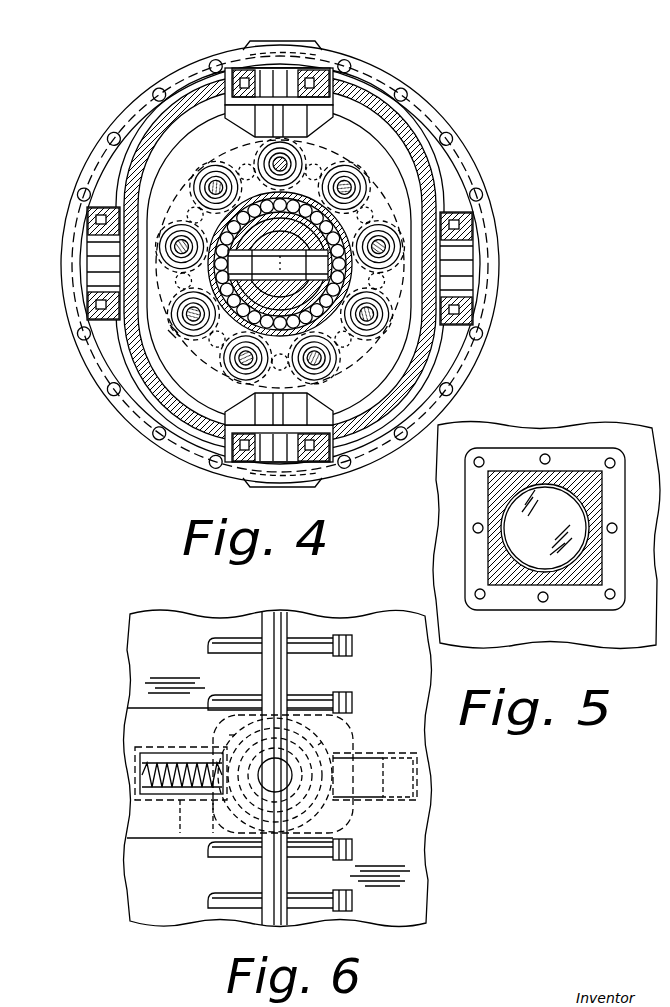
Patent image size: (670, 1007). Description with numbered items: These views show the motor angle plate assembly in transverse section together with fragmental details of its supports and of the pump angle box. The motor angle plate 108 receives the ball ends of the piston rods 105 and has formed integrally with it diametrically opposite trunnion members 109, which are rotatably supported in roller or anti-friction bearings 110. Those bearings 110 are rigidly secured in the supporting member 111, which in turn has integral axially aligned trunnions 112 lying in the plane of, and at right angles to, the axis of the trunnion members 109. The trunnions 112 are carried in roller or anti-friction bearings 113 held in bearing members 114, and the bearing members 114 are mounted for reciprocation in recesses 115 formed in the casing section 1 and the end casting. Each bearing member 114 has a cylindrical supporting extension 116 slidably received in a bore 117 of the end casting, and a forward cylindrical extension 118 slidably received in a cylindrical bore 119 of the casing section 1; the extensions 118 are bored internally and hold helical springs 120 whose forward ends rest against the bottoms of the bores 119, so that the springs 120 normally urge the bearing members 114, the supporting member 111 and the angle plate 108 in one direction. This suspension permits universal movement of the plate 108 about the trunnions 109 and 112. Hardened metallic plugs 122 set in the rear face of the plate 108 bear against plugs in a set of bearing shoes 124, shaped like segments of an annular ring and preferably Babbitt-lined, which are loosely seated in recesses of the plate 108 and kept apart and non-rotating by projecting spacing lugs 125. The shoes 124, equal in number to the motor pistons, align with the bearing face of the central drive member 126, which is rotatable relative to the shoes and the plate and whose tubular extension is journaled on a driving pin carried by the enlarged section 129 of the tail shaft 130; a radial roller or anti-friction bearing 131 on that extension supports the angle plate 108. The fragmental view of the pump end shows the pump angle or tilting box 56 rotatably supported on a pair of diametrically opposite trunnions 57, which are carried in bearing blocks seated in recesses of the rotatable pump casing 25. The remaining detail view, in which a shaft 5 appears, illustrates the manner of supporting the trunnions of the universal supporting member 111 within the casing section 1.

In FIG. 6, the casing section 1 is at (168, 900).
In FIG. 6, the shaft 5 is at (395, 905).
In FIG. 5, the rotatable pump casing 25 is at (452, 614).
In FIG. 5, the pump angle or tilting box 56 is at (512, 468).
In FIG. 5, the trunnions 57 is at (502, 530).
In FIG. 4, the piston rods 105 is at (240, 160).
In FIG. 4, the motor angle plate 108 is at (352, 178).
In FIG. 4, the trunnion members 109 is at (318, 62).
In FIG. 4, the roller or anti-friction bearings 110 is at (275, 44).
In FIG. 4, the supporting member 111 is at (420, 124).
In FIG. 4, the trunnions 112 is at (474, 265).
In FIG. 4, the roller or anti-friction bearings 113 is at (90, 215).
In FIG. 4, the bearing members 114 is at (489, 212).
In FIG. 6, the bearing members 114 is at (320, 745).
In FIG. 4, the recesses 115 is at (466, 180).
In FIG. 6, the recesses 115 is at (232, 735).
In FIG. 6, the cylindrical supporting extensions 116 is at (355, 805).
In FIG. 4, the bores 117 is at (370, 332).
In FIG. 6, the bores 117 is at (400, 752).
In FIG. 6, the cylindrical extensions 118 is at (195, 752).
In FIG. 6, the cylindrical bores 119 is at (205, 802).
In FIG. 6, the helical springs 120 is at (166, 790).
In FIG. 4, the hardened metallic plugs 122 is at (330, 152).
In FIG. 4, the bearing shoes 124 is at (188, 238).
In FIG. 4, the projecting spacing lugs 125 is at (172, 330).
In FIG. 4, the central drive member 126 is at (233, 372).
In FIG. 4, the enlarged section 129 is at (326, 356).
In FIG. 4, the tail shaft 130 is at (364, 208).
In FIG. 4, the radial roller or anti-friction bearing 131 is at (350, 186).